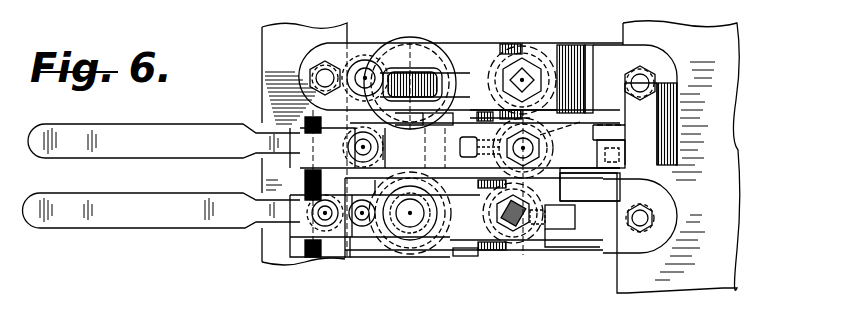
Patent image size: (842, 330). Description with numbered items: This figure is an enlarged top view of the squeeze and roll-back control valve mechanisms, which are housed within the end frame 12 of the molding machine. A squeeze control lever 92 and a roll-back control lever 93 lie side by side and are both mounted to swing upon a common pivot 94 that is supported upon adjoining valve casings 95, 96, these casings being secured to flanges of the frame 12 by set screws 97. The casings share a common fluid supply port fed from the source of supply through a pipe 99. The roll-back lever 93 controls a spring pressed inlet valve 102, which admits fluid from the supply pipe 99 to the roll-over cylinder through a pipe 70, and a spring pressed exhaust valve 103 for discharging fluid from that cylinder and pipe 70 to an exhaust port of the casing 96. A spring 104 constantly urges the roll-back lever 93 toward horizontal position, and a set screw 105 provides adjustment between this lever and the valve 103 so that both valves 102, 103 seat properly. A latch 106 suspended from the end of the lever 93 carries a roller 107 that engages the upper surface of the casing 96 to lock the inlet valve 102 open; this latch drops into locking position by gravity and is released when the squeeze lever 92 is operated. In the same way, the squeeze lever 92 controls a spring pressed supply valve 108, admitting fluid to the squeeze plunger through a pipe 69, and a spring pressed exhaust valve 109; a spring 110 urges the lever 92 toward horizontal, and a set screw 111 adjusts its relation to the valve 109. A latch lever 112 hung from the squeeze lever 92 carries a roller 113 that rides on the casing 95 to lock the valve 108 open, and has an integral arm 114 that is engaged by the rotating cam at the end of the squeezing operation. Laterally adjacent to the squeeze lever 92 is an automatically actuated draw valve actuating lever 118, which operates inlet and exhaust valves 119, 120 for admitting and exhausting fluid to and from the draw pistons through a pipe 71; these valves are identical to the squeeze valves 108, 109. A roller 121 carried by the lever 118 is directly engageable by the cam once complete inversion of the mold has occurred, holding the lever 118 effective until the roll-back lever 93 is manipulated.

The end frame 12 is at (262, 258).
The squeeze control lever 92 is at (77, 110).
The roll-back control lever 93 is at (44, 226).
The valve casing 95 is at (376, 47).
The set screws 97 is at (300, 63).
The roller 121 is at (353, 103).
The inlet valve 119 is at (419, 41).
The exhaust valve 120 is at (515, 52).
The pipe 71 is at (555, 36).
The draw valve actuating lever 118 is at (558, 62).
The integral arm 114 is at (507, 120).
The set screw 111 is at (580, 122).
The roller 113 is at (673, 103).
The latch lever 112 is at (673, 133).
The spring pressed valve 108 is at (403, 140).
The spring 110 is at (357, 170).
The pipe 69 is at (458, 150).
The spring pressed exhaust valve 109 is at (535, 150).
The spring pressed valve 102 is at (342, 203).
The spring pressed exhaust valve 103 is at (436, 222).
The pipe 99 is at (404, 255).
The latch 106 is at (618, 198).
The set screw 105 is at (508, 220).
The roller 107 is at (567, 247).
The pipe 70 is at (486, 258).
The common pivot 94 is at (449, 257).
The valve casing 96 is at (365, 247).
The spring 104 is at (347, 258).